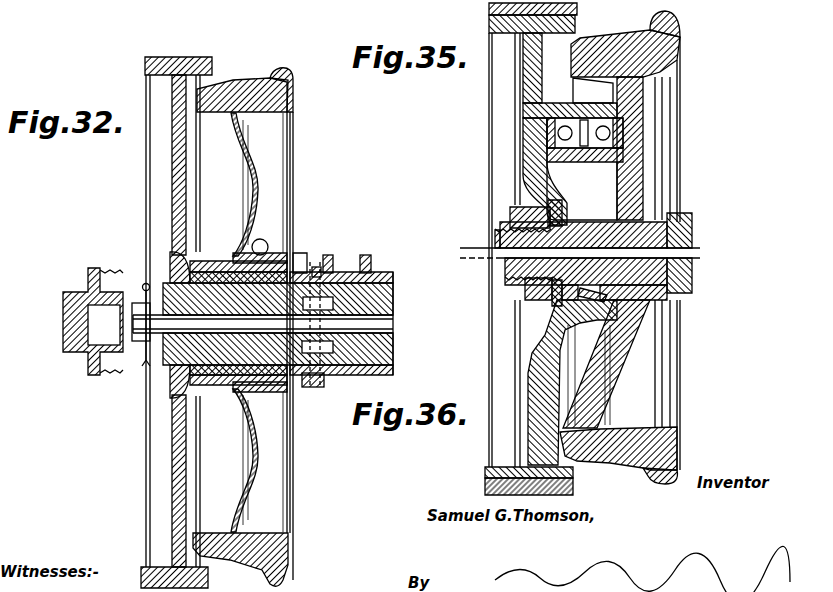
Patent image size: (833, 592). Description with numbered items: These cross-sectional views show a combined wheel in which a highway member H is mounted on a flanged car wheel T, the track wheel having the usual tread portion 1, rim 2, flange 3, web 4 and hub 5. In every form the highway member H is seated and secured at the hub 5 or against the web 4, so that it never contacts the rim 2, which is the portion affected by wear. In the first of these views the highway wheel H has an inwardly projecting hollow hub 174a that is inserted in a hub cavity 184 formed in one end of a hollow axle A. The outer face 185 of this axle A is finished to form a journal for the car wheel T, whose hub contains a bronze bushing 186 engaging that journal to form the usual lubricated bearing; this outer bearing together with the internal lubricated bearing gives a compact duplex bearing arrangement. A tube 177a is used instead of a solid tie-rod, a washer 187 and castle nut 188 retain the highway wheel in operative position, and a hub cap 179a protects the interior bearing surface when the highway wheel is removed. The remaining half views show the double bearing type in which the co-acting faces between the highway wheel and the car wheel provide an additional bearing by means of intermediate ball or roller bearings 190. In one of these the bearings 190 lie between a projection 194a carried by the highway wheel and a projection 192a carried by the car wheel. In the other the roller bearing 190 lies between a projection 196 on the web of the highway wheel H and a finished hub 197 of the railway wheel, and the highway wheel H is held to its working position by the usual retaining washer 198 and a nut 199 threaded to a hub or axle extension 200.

In FIG. 32, the highway member H is at (180, 56).
In FIG. 35, the highway member H is at (486, 17).
In FIG. 36, the highway member H is at (484, 452).
In FIG. 32, the flanged car wheel T is at (258, 322).
In FIG. 35, the flanged car wheel T is at (640, 114).
In FIG. 36, the flanged car wheel T is at (631, 396).
In FIG. 32, the tread portion 1 is at (257, 80).
In FIG. 35, the tread portion 1 is at (634, 34).
In FIG. 36, the tread portion 1 is at (631, 463).
In FIG. 32, the rim 2 is at (223, 94).
In FIG. 35, the rim 2 is at (593, 52).
In FIG. 36, the rim 2 is at (598, 458).
In FIG. 32, the flange 3 is at (288, 73).
In FIG. 35, the flange 3 is at (678, 28).
In FIG. 36, the flange 3 is at (678, 474).
In FIG. 32, the web 4 is at (260, 172).
In FIG. 35, the web 4 is at (645, 154).
In FIG. 36, the web 4 is at (630, 353).
In FIG. 35, the hub 5 is at (645, 230).
In FIG. 36, the hub 5 is at (657, 290).
In FIG. 32, the hollow axle A is at (392, 300).
In FIG. 32, the inwardly projecting hollow hub 174a is at (288, 254).
In FIG. 32, the tube 177a is at (378, 323).
In FIG. 32, the hub cap 179a is at (62, 298).
In FIG. 32, the hub cavity 184 is at (362, 272).
In FIG. 32, the outer face 185 is at (306, 262).
In FIG. 32, the bronze bushing 186 is at (270, 244).
In FIG. 32, the washer 187 is at (165, 292).
In FIG. 32, the castle nut 188 is at (138, 352).
In FIG. 35, the intermediate bearings 190 is at (623, 127).
In FIG. 36, the intermediate bearings 190 is at (618, 301).
In FIG. 35, the projection 192a is at (601, 151).
In FIG. 35, the projection 194a is at (611, 103).
In FIG. 36, the projection 196 is at (598, 323).
In FIG. 36, the finished hub 197 is at (600, 284).
In FIG. 35, the retaining washer 198 is at (545, 200).
In FIG. 36, the retaining washer 198 is at (543, 308).
In FIG. 35, the nut 199 is at (520, 214).
In FIG. 36, the nut 199 is at (537, 291).
In FIG. 35, the hub or axle extension 200 is at (512, 238).
In FIG. 36, the hub or axle extension 200 is at (517, 263).